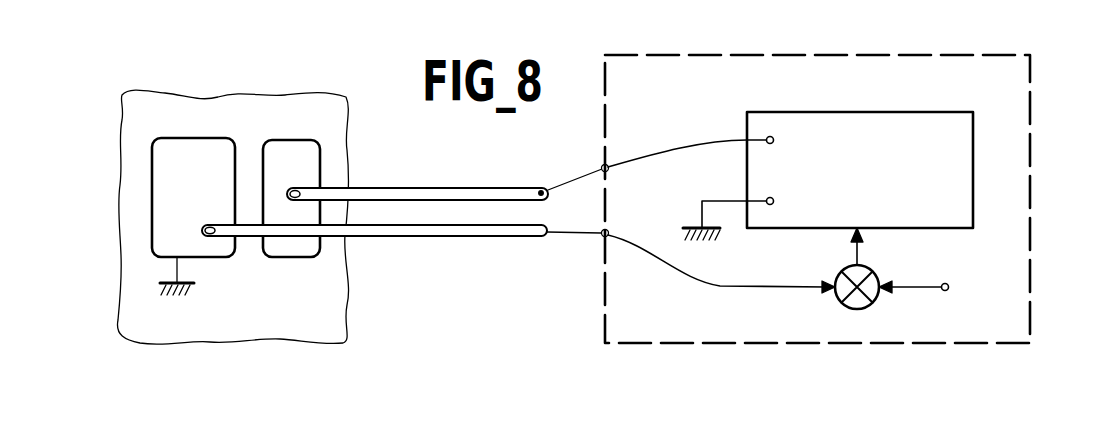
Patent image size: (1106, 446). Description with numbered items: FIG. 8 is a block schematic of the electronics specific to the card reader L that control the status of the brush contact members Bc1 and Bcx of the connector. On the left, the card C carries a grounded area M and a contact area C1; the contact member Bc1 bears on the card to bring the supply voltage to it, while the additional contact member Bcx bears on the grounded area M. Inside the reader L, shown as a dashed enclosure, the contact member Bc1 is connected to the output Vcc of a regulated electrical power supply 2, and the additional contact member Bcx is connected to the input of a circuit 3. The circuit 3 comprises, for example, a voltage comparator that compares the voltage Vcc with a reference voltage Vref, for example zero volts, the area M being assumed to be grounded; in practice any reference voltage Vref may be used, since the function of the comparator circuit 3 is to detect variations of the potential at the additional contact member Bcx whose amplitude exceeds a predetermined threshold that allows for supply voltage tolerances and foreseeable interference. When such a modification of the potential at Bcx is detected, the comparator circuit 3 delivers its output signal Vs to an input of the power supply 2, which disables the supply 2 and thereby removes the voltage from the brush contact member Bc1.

The card C is at (130, 322).
The area M is at (195, 143).
The contact area C1 is at (285, 245).
The contact member Bc1 is at (410, 192).
The additional contact member Bcx is at (397, 235).
The reader L is at (1032, 227).
The regulated electrical power supply 2 is at (857, 112).
The output voltage Vcc is at (665, 150).
The comparator circuit 3 is at (836, 310).
The output signal Vs is at (863, 250).
The reference voltage Vref is at (950, 283).